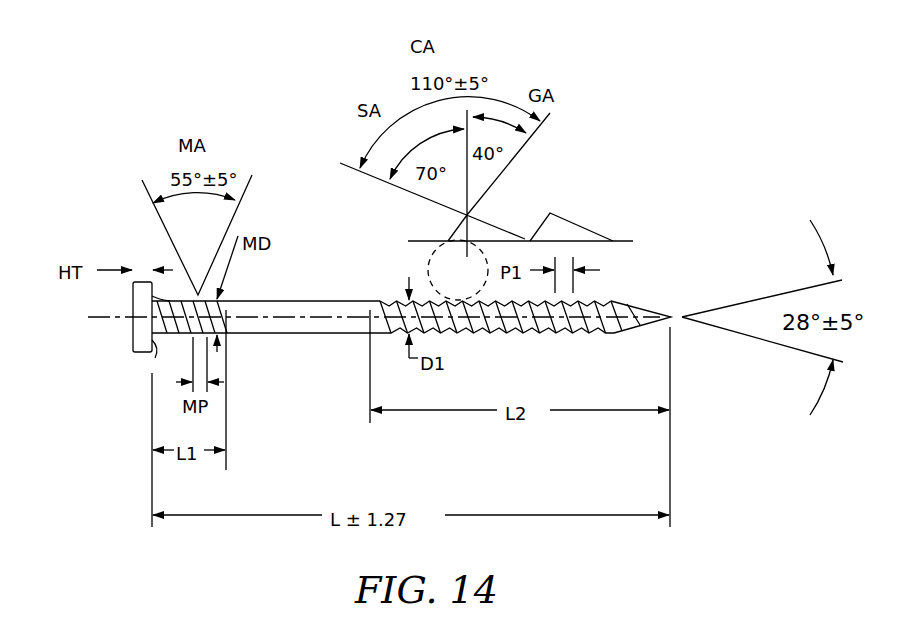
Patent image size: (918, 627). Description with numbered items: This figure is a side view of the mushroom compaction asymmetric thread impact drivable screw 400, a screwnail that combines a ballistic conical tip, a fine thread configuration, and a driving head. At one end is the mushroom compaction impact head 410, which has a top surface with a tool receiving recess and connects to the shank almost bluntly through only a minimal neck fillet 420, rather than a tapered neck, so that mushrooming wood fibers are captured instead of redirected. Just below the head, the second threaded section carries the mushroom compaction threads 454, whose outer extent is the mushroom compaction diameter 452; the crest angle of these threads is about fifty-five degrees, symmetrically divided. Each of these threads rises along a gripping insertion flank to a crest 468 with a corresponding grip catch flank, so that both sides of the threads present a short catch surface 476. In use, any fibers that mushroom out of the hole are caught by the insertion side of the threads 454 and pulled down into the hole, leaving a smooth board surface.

The mushroom compaction asymmetric thread impact drivable screw 400 is at (646, 152).
The mushroom compaction impact head 410 is at (133, 296).
The neck fillet 420 is at (158, 352).
The mushroom compaction diameter 452 is at (280, 232).
The mushroom compaction threads 454 is at (232, 316).
The crest 468 is at (196, 292).
The short catch surface 476 is at (232, 308).